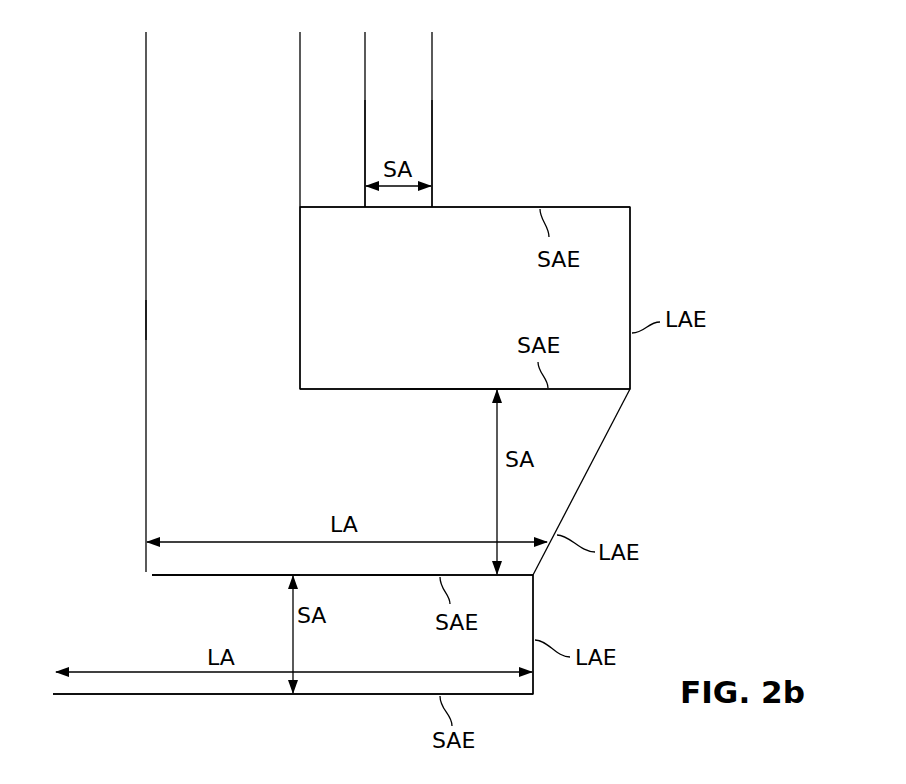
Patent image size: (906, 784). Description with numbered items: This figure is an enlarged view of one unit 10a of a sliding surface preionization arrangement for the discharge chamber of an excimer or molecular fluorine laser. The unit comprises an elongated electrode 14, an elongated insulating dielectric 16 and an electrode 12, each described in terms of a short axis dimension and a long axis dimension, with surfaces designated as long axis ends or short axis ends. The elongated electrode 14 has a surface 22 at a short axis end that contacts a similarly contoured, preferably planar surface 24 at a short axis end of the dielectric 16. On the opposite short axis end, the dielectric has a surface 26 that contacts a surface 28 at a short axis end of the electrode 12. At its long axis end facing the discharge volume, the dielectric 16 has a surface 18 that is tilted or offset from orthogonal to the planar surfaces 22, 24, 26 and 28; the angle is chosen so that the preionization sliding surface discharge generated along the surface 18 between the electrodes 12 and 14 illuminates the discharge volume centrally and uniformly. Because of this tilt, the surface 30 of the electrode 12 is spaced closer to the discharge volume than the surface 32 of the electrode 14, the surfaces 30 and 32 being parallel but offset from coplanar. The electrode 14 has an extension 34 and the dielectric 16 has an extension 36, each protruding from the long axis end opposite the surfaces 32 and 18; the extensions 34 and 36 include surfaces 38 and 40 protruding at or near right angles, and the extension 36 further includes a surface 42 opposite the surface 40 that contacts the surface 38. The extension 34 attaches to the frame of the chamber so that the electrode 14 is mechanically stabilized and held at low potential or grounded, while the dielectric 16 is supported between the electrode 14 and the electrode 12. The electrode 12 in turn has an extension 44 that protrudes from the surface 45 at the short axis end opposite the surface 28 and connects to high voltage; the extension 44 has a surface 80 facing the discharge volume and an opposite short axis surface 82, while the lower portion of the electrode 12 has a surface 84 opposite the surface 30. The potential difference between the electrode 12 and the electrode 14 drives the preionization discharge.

The unit of the sliding surface preionization arrangement 10a is at (641, 137).
The electrode 12 is at (505, 315).
The elongated electrode 14 is at (293, 634).
The elongated insulating dielectric 16 is at (413, 485).
The surface at long axis end of dielectric 18 is at (600, 455).
The surface at short axis end of electrode 14 22 is at (395, 577).
The surface at short axis end of dielectric 24 is at (408, 574).
The surface at short axis end of dielectric 26 is at (449, 391).
The surface at short axis end of electrode 12 28 is at (413, 387).
The surface of electrode 12 30 is at (632, 283).
The surface of electrode 14 32 is at (536, 618).
The extension of electrode 14 34 is at (82, 492).
The extension of dielectric 36 is at (222, 373).
The surface of extension 34 38 is at (145, 395).
The surface of extension 36 40 is at (298, 298).
The surface of extension 36 42 is at (147, 327).
The extension of electrode 12 44 is at (408, 108).
The surface of electrode 12 45 is at (478, 209).
The surface of extension 44 80 is at (433, 137).
The short axis surface of extension 44 82 is at (364, 149).
The surface of lower portion of electrode 12 84 is at (302, 357).